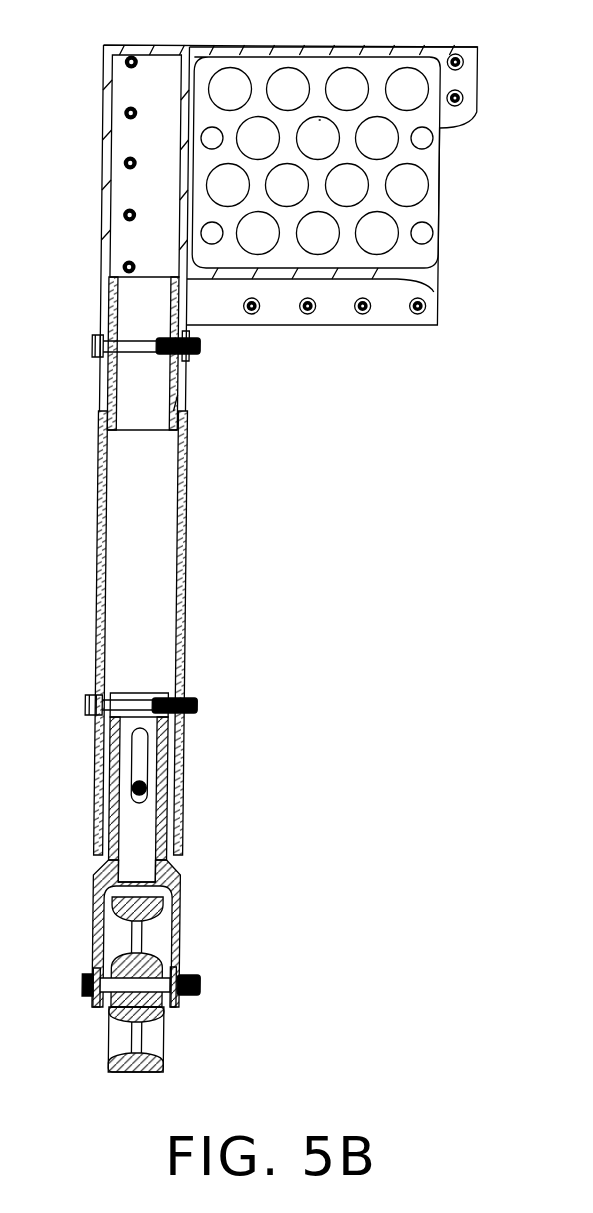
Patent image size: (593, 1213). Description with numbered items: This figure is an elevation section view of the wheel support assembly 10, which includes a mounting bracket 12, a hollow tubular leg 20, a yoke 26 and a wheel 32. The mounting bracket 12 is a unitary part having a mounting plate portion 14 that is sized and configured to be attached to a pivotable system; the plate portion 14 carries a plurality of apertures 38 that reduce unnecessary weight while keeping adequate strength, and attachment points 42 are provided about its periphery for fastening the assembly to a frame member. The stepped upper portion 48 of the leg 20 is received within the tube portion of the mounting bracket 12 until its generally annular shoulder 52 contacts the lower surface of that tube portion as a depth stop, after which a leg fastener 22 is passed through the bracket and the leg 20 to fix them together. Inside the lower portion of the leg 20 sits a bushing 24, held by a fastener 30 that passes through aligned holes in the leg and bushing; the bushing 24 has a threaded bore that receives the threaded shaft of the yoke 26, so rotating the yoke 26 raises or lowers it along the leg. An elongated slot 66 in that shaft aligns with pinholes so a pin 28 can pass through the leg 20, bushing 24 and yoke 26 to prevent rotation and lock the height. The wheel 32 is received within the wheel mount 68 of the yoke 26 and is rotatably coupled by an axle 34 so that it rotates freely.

The wheel support assembly 10 is at (130, 38).
The mounting bracket 12 is at (378, 45).
The mounting plate portion 14 is at (429, 212).
The apertures 38 is at (409, 183).
The attachment points 42 is at (130, 163).
The stepped upper portion 48 is at (117, 383).
The leg fastener 22 is at (147, 352).
The annular shoulder 52 is at (189, 414).
The leg 20 is at (186, 574).
The fastener 30 is at (155, 709).
The bushing 24 is at (178, 768).
The elongated slot 66 is at (145, 765).
The pin 28 is at (147, 812).
The yoke 26 is at (196, 895).
The wheel mount 68 is at (190, 943).
The axle 34 is at (214, 996).
The wheel 32 is at (155, 1070).